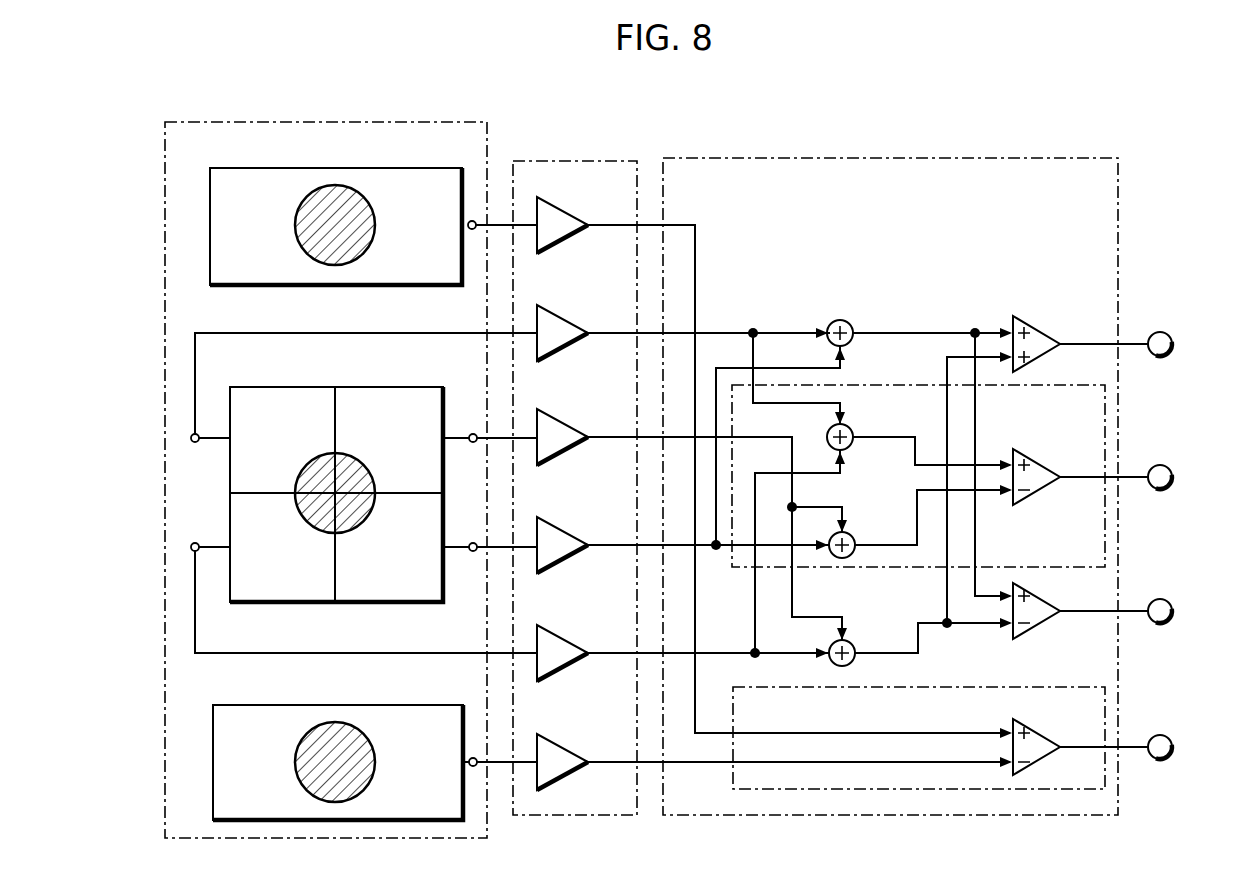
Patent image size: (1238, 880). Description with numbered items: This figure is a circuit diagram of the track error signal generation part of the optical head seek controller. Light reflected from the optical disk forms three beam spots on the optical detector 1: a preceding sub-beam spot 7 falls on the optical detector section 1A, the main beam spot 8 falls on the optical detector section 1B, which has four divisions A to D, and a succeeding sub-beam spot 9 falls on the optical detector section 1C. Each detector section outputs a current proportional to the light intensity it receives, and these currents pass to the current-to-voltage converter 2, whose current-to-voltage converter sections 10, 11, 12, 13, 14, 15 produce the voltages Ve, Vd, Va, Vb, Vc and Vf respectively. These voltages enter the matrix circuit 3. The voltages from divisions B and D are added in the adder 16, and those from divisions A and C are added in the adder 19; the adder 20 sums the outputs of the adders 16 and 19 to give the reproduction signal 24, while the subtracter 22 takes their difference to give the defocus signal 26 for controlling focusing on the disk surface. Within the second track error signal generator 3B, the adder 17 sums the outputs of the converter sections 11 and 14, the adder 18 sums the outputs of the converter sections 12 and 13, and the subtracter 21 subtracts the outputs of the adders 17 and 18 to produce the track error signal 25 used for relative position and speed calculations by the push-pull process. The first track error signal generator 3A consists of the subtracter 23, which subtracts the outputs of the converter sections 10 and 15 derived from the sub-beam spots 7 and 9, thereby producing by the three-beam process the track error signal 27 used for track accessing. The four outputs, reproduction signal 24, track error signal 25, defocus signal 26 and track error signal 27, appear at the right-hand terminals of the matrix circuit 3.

The optical detector 1 is at (263, 122).
The optical detector section 1A is at (312, 168).
The optical detector section 1B is at (312, 387).
The optical detector section 1C is at (312, 705).
The current-to-voltage converter 2 is at (548, 161).
The matrix circuit 3 is at (908, 158).
The first track error signal generator 3A is at (924, 687).
The second track error signal generator 3B is at (868, 385).
The beam spot 7 is at (360, 258).
The beam spot 8 is at (350, 530).
The beam spot 9 is at (355, 798).
The current-to-voltage converter section 10 is at (565, 211).
The current-to-voltage converter section 11 is at (565, 319).
The current-to-voltage converter section 12 is at (565, 423).
The current-to-voltage converter section 13 is at (565, 531).
The current-to-voltage converter section 14 is at (565, 639).
The current-to-voltage converter section 15 is at (565, 748).
The adder 16 is at (840, 320).
The adder 17 is at (850, 428).
The adder 18 is at (852, 536).
The adder 19 is at (852, 644).
The adder 20 is at (1036, 328).
The subtracter 21 is at (1036, 461).
The subtracter 22 is at (1038, 625).
The subtracter 23 is at (1036, 731).
The reproduction signal 24 is at (1164, 331).
The track error signal 25 is at (1164, 464).
The defocus signal 26 is at (1164, 598).
The track error signal 27 is at (1164, 734).